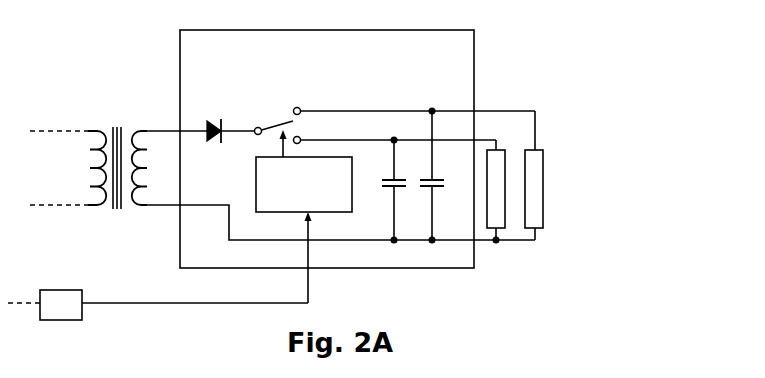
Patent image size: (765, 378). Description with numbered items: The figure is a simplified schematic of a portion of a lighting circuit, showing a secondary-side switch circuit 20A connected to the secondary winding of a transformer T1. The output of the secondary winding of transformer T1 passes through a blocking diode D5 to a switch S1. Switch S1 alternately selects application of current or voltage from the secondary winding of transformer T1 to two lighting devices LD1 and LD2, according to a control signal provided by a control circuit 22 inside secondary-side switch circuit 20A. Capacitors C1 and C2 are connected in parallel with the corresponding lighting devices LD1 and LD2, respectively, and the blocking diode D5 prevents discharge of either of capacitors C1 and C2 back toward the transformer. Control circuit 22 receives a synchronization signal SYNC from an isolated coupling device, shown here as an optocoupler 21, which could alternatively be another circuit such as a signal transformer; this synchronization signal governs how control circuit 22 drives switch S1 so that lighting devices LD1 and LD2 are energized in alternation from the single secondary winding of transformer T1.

The secondary-side switch circuit 20A is at (447, 56).
The control circuit 22 is at (287, 201).
The optocoupler 21 is at (75, 320).
The transformer T1 is at (88, 157).
The blocking diode D5 is at (231, 119).
The switch S1 is at (278, 121).
The capacitor C1 is at (400, 190).
The capacitor C2 is at (438, 176).
The lighting device LD1 is at (506, 151).
The lighting device LD2 is at (544, 155).